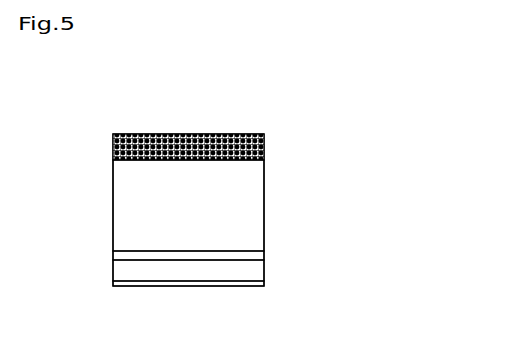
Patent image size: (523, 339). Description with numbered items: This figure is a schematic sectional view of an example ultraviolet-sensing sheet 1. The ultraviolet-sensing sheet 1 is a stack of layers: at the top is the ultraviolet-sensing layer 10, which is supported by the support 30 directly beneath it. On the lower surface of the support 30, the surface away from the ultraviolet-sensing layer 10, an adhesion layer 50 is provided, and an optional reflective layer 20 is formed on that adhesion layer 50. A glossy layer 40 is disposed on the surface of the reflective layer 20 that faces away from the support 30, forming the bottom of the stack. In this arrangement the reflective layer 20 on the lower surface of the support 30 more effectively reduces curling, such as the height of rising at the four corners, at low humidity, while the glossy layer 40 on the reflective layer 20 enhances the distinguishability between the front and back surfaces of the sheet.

The ultraviolet-sensing sheet 1 is at (159, 110).
The ultraviolet-sensing layer 10 is at (113, 141).
The reflective layer 20 is at (118, 268).
The support 30 is at (113, 219).
The glossy layer 40 is at (256, 284).
The adhesion layer 50 is at (258, 257).